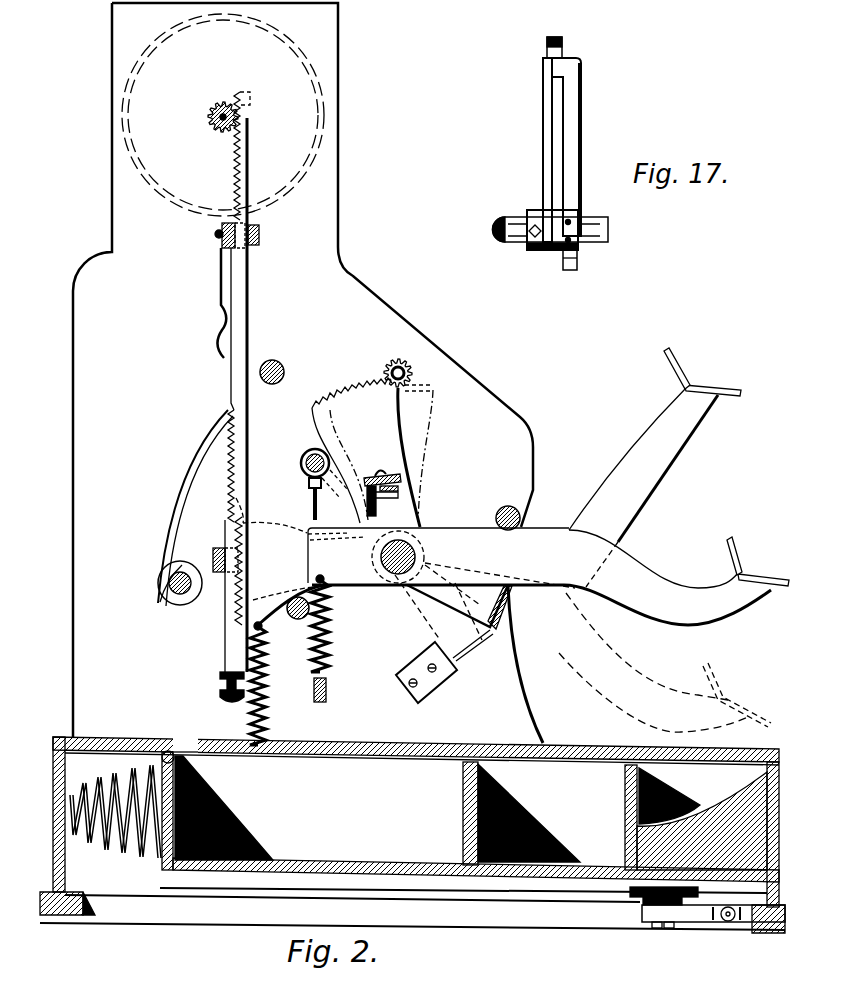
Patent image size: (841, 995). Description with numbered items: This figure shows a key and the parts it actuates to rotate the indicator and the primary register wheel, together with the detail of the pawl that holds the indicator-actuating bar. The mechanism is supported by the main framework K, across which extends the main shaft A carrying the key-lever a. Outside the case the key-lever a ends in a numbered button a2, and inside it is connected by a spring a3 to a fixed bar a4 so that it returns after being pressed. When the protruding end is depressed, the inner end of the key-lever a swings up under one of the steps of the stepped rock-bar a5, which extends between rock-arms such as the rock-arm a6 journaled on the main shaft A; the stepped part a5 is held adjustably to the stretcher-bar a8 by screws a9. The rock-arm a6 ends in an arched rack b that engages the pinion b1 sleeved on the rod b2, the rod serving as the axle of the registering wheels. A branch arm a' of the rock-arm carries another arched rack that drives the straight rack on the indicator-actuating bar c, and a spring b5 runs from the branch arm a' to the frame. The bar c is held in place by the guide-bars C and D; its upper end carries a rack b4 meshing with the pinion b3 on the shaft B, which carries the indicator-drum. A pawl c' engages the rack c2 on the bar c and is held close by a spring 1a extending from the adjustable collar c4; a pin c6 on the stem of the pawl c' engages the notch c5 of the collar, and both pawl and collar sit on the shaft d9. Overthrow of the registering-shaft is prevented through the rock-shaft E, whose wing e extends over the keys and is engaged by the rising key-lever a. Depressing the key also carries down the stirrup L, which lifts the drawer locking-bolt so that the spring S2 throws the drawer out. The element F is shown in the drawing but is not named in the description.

In FIG. 2, the main framework K is at (303, 370).
In FIG. 2, the shaft B is at (210, 121).
In FIG. 2, the pinion b3 is at (217, 104).
In FIG. 2, the rack b4 is at (230, 166).
In FIG. 2, the guide-bar C is at (262, 236).
In FIG. 2, the indicator-actuating bar c is at (241, 410).
In FIG. 2, the rack c2 is at (228, 482).
In FIG. 2, the pawl c' is at (195, 508).
In FIG. 17, the pawl c' is at (541, 139).
In FIG. 2, the spring 1a is at (168, 530).
In FIG. 17, the spring 1a is at (583, 162).
In FIG. 2, the notch c5 is at (176, 558).
In FIG. 2, the adjustable collar c4 is at (174, 564).
In FIG. 17, the adjustable collar c4 is at (558, 257).
In FIG. 2, the pin c6 is at (162, 574).
In FIG. 17, the pin c6 is at (567, 216).
In FIG. 2, the shaft d9 is at (165, 597).
In FIG. 17, the shaft d9 is at (605, 237).
In FIG. 2, the guide-bar D is at (219, 575).
In FIG. 2, the pin F is at (283, 369).
In FIG. 2, the arched rack b is at (244, 556).
In FIG. 2, the spring b5 is at (292, 674).
In FIG. 2, the rod b2 is at (401, 363).
In FIG. 2, the pinion b1 is at (410, 375).
In FIG. 2, the rock-arm a6 is at (372, 456).
In FIG. 2, the screws a9 is at (383, 472).
In FIG. 2, the stretcher-bar a8 is at (402, 480).
In FIG. 2, the stepped rock-bar a5 is at (380, 500).
In FIG. 2, the rock-shaft E is at (302, 461).
In FIG. 2, the wing e is at (312, 503).
In FIG. 2, the main shaft A is at (414, 538).
In FIG. 2, the key-lever a is at (665, 560).
In FIG. 2, the button a2 is at (726, 467).
In FIG. 2, the branch arm a' is at (280, 561).
In FIG. 2, the spring a3 is at (332, 641).
In FIG. 2, the fixed bar a4 is at (329, 690).
In FIG. 2, the stirrup L is at (505, 608).
In FIG. 2, the spring S2 is at (115, 824).